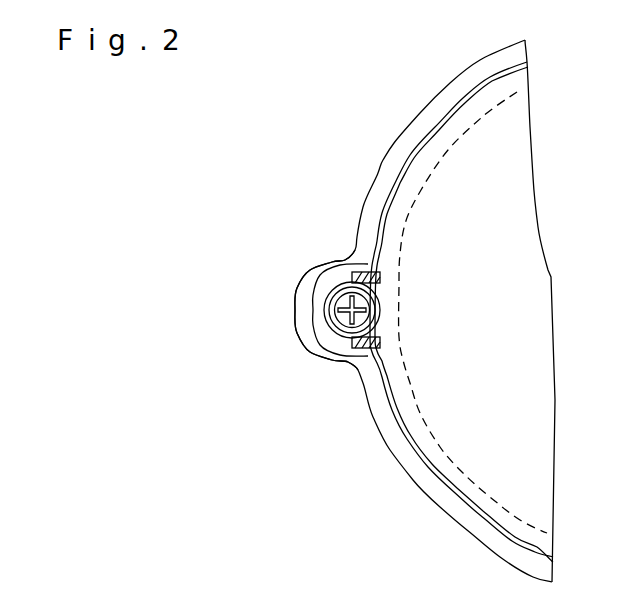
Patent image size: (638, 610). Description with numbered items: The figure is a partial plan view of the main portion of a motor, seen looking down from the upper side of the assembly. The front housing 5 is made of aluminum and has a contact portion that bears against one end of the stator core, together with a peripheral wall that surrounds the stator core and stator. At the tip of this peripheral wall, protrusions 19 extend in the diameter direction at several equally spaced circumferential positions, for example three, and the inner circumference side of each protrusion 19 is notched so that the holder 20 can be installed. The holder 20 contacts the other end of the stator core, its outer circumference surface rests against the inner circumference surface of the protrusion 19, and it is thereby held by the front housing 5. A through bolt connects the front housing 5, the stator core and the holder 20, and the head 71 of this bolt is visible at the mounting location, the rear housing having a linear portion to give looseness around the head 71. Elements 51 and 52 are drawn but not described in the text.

The front housing 5 is at (390, 447).
The inner wall of housing 51 is at (399, 418).
The clip nut 52 is at (383, 290).
The head 71 is at (322, 264).
The holder 20 is at (318, 330).
The protrusion 19 is at (297, 298).